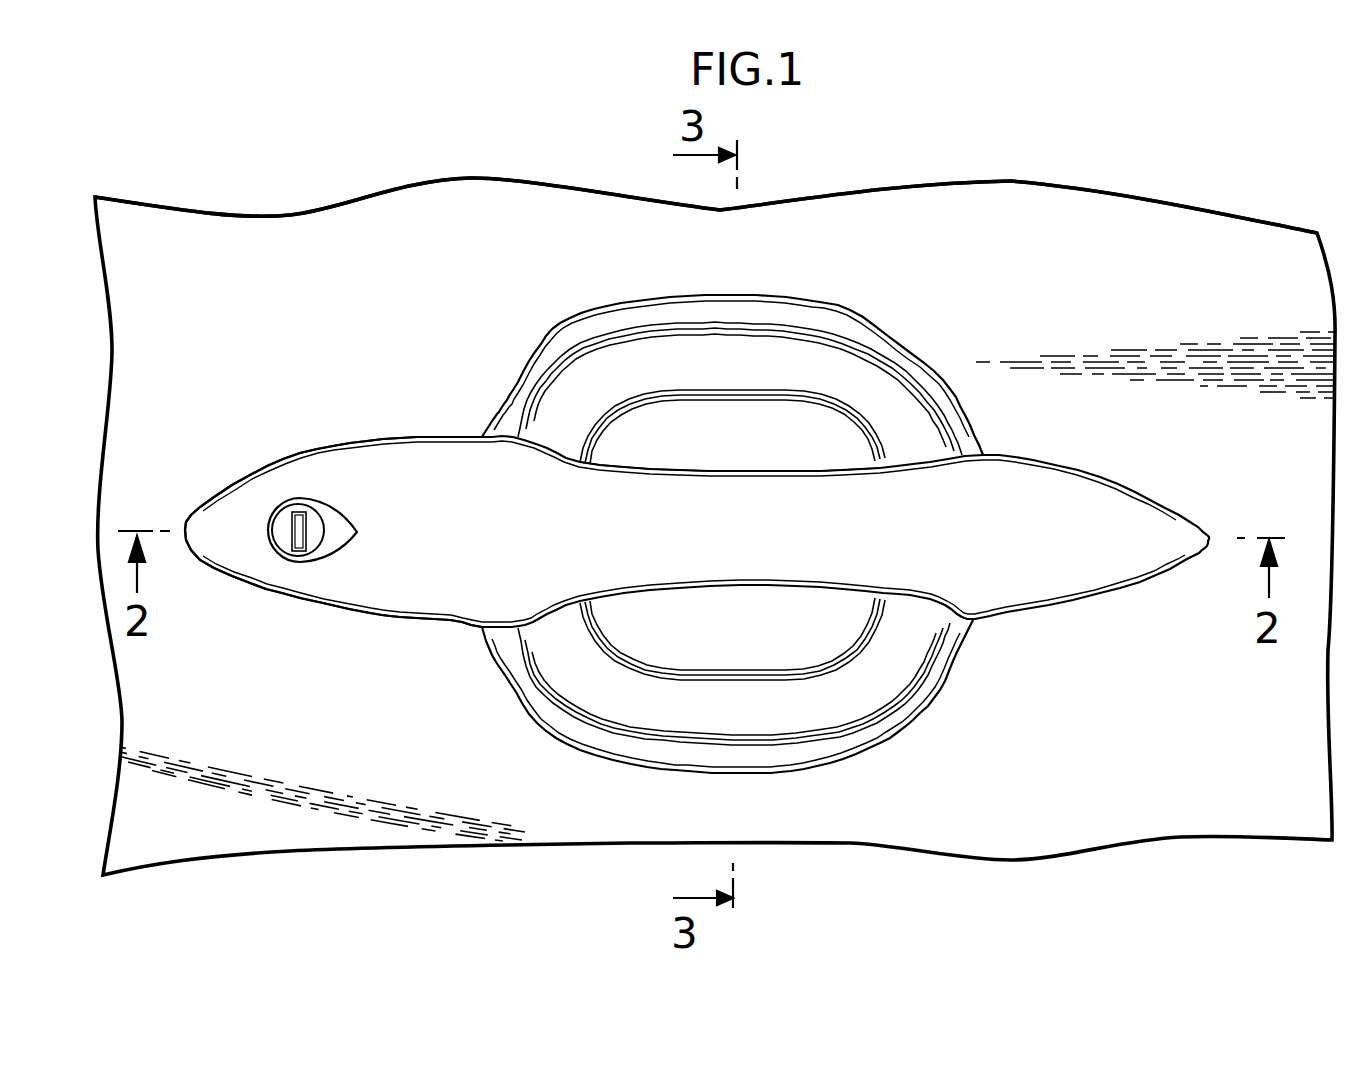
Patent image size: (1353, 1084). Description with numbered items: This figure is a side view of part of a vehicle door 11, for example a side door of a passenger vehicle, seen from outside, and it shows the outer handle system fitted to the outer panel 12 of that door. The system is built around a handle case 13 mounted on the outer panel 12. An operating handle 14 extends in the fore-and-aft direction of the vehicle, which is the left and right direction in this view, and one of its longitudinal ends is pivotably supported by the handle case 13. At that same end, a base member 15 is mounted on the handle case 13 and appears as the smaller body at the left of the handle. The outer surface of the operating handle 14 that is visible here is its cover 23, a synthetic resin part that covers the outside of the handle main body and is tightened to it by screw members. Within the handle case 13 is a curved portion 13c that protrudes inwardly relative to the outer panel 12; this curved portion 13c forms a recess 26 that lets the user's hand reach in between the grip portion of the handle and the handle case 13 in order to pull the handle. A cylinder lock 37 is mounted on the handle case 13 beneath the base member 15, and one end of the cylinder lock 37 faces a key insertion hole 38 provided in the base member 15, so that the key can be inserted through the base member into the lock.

The vehicle door 11 is at (300, 341).
The outer panel 12 is at (925, 208).
The handle case 13 is at (934, 339).
The curved portion 13c is at (635, 358).
The operating handle 14 is at (1036, 457).
The base member 15 is at (394, 472).
The cover 23 is at (718, 488).
The recess 26 is at (768, 652).
The cylinder lock 37 is at (276, 498).
The key insertion hole 38 is at (341, 541).